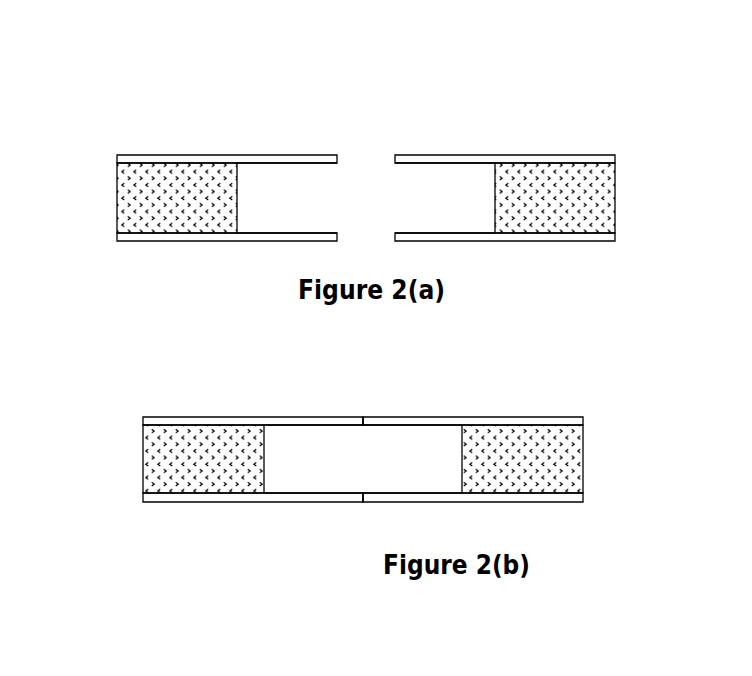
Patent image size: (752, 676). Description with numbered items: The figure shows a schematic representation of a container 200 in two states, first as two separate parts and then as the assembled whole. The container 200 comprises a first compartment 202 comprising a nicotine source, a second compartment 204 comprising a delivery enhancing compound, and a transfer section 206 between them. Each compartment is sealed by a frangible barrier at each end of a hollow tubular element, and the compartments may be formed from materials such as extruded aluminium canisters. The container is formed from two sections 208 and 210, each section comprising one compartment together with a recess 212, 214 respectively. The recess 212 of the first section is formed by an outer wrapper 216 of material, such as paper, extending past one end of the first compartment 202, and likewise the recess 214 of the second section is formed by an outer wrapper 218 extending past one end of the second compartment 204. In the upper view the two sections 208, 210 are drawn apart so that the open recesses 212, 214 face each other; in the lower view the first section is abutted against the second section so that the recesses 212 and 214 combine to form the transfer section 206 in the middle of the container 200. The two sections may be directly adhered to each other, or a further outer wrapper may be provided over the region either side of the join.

In FIG. 2A, the container 200 is at (353, 97).
In FIG. 2A, the first compartment 202 is at (166, 175).
In FIG. 2A, the second compartment 204 is at (563, 185).
In FIG. 2B, the transfer section 206 is at (350, 472).
In FIG. 2B, the first section 208 is at (362, 410).
In FIG. 2B, the second section 210 is at (585, 410).
In FIG. 2A, the recess 212 is at (291, 181).
In FIG. 2A, the recess 214 is at (462, 190).
In FIG. 2A, the outer wrapper 216 is at (206, 214).
In FIG. 2A, the outer wrapper 218 is at (528, 197).